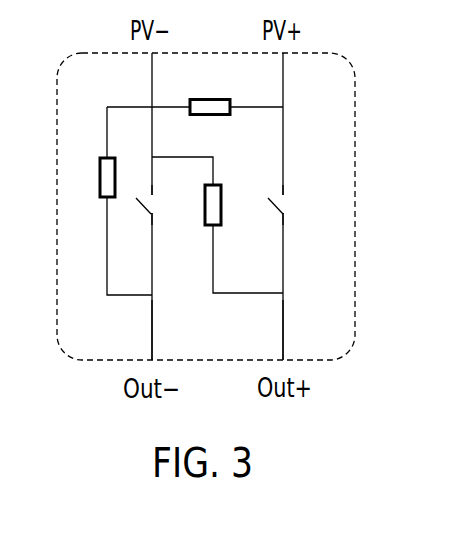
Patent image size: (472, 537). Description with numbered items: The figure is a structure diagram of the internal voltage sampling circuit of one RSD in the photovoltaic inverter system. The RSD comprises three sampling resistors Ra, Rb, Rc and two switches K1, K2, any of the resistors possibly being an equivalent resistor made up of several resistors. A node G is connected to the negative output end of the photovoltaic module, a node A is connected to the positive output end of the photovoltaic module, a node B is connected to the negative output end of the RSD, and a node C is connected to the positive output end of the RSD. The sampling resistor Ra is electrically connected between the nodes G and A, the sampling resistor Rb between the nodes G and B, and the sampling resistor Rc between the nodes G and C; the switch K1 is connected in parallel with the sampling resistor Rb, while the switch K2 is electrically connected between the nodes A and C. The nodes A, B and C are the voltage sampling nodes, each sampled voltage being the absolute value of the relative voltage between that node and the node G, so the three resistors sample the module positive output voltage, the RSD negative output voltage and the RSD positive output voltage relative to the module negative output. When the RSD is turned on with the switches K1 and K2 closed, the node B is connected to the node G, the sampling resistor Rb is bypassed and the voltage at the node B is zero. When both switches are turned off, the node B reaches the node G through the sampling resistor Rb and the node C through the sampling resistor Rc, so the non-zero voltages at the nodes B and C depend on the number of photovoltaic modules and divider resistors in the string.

The sampling resistor Ra is at (191, 125).
The sampling resistor Rb is at (107, 201).
The sampling resistor Rc is at (217, 225).
The switch K1 is at (133, 220).
The switch K2 is at (294, 224).
The node G is at (129, 91).
The node A is at (267, 91).
The node B is at (137, 330).
The node C is at (294, 330).